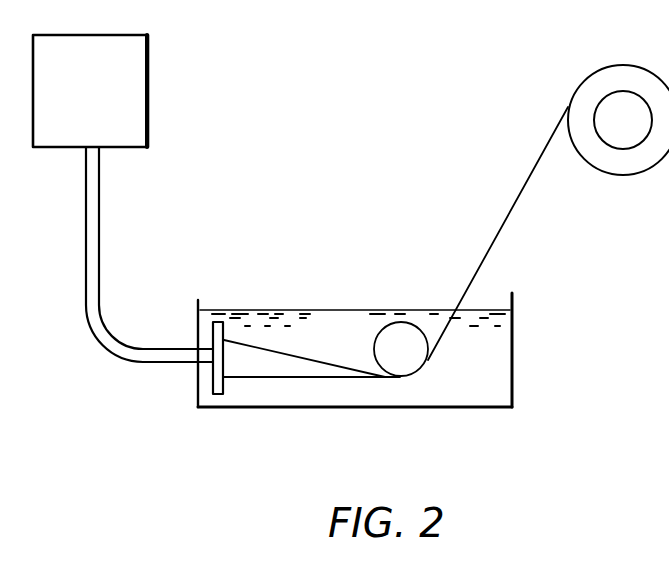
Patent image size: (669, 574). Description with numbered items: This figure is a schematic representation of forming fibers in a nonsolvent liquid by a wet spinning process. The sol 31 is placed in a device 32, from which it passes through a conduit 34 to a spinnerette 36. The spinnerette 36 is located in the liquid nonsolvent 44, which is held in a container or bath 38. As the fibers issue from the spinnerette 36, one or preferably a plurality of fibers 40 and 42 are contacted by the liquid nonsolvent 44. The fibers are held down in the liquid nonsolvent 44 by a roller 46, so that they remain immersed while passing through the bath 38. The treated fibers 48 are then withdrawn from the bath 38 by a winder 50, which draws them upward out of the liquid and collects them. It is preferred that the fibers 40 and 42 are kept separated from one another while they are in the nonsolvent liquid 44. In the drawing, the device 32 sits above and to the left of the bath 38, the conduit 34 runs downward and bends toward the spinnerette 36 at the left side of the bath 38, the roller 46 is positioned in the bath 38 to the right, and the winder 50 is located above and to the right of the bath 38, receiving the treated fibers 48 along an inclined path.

The sol 31 is at (103, 108).
The device 32 is at (149, 90).
The conduit 34 is at (95, 342).
The spinnerette 36 is at (213, 390).
The container or bath 38 is at (405, 407).
The fiber 40 is at (303, 378).
The fiber 42 is at (325, 360).
The liquid nonsolvent 44 is at (513, 353).
The roller 46 is at (422, 366).
The treated fibers 48 is at (503, 225).
The winder 50 is at (600, 175).